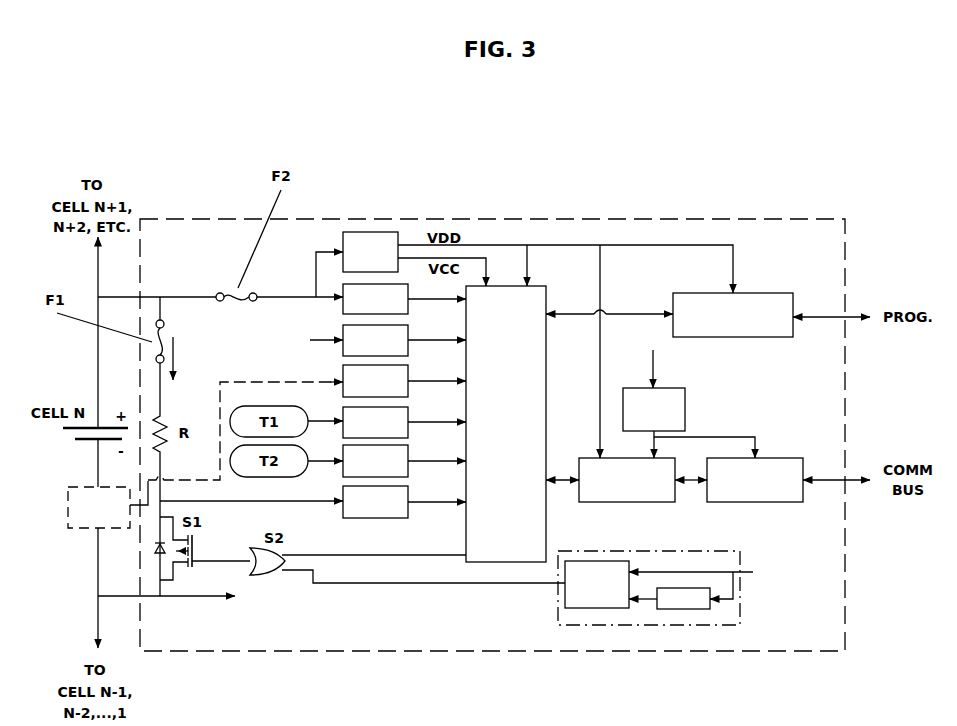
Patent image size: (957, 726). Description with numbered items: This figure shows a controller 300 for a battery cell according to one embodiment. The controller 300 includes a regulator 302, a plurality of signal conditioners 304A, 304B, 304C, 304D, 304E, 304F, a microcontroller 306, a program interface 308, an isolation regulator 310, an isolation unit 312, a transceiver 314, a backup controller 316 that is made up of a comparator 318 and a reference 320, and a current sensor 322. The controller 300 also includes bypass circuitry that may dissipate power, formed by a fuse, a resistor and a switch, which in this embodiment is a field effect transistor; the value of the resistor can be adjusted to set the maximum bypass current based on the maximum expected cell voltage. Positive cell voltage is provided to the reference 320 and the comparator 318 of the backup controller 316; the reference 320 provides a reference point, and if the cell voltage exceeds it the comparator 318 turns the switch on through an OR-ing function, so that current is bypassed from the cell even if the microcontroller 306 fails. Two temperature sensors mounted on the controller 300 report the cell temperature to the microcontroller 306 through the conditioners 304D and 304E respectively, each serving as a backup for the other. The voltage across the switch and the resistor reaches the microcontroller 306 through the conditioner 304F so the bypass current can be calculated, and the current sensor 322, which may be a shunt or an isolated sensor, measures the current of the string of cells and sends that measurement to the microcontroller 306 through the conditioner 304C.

The controller 300 is at (781, 180).
The regulator 302 is at (370, 252).
The signal conditioner 304A is at (375, 299).
The signal conditioner 304B is at (375, 340).
The signal conditioner 304C is at (375, 381).
The signal conditioner 304D is at (375, 422).
The signal conditioner 304E is at (375, 461).
The signal conditioner 304F is at (375, 502).
The microcontroller 306 is at (506, 424).
The program interface 308 is at (733, 315).
The isolation regulator 310 is at (654, 409).
The isolation unit 312 is at (627, 480).
The transceiver 314 is at (755, 480).
The backup controller 316 is at (650, 626).
The comparator 318 is at (597, 584).
The reference 320 is at (683, 598).
The current sensor 322 is at (108, 504).